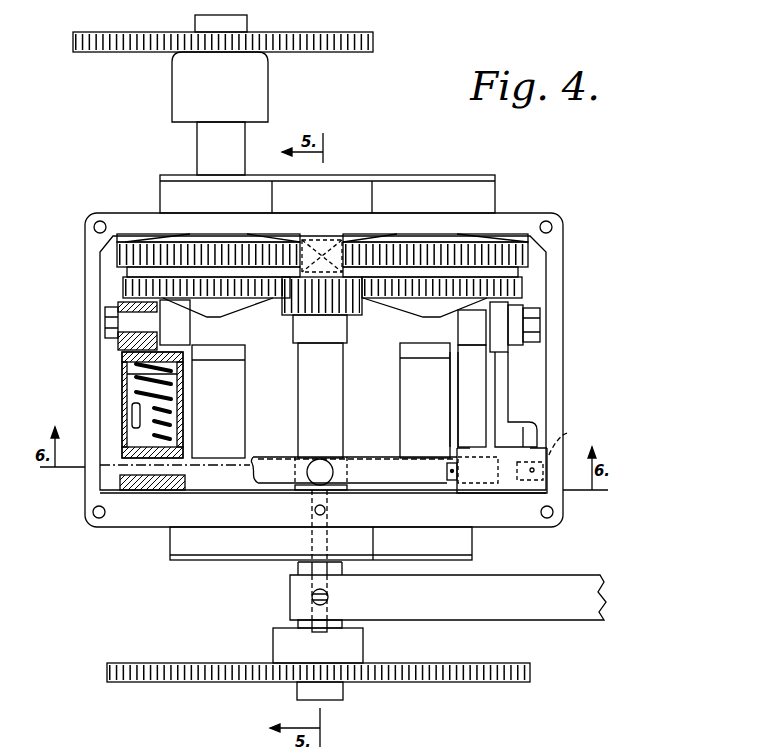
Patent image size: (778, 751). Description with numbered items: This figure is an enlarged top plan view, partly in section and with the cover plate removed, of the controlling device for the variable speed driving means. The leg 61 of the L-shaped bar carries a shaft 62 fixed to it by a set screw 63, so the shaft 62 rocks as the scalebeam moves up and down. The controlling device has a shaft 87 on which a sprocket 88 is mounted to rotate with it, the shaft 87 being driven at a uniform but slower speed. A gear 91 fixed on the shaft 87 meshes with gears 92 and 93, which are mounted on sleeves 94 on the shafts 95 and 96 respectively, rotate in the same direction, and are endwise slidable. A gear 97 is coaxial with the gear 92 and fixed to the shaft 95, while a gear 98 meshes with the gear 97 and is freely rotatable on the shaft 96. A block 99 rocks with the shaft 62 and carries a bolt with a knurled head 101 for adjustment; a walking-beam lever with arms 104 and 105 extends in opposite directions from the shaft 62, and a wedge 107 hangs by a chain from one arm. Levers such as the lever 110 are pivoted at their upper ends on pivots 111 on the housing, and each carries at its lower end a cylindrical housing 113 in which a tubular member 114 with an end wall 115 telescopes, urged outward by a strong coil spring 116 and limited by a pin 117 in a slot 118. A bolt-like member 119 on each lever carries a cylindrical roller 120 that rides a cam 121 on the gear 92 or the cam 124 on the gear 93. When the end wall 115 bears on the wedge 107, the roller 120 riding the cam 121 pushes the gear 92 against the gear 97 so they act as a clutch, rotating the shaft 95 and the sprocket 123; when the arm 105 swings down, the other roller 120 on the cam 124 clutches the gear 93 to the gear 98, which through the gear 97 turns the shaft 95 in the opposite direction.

The leg 61 is at (572, 610).
The shaft 62 is at (297, 572).
The set screw 63 is at (320, 603).
The shaft 87 is at (323, 392).
The sprocket 88 is at (507, 677).
The gear 91 is at (292, 318).
The gear 92 is at (125, 285).
The gear 93 is at (522, 288).
The sleeve 94 is at (223, 353).
The shaft 95 is at (205, 153).
The shaft 96 is at (407, 405).
The gear 97 is at (133, 250).
The gear 98 is at (513, 250).
The block 99 is at (307, 456).
The knurled head 101 is at (324, 460).
The arm 104 is at (273, 473).
The arm 105 is at (385, 468).
The wedge 107 is at (148, 486).
The lever 110 is at (517, 400).
The pivot 111 is at (572, 432).
The cylindrical housing 113 is at (122, 375).
The tubular member 114 is at (135, 396).
The end wall 115 is at (117, 455).
The coil spring 116 is at (125, 362).
The pin 117 is at (128, 418).
The slot 118 is at (123, 437).
The bolt-like member 119 is at (110, 317).
The roller 120 is at (245, 360).
The cam 121 is at (207, 326).
The sprocket 123 is at (138, 45).
The cam 124 is at (433, 318).